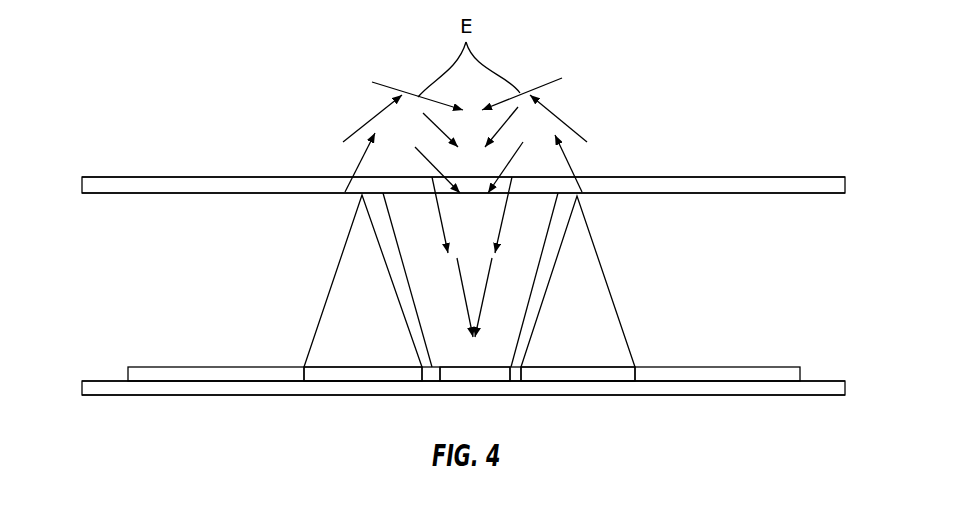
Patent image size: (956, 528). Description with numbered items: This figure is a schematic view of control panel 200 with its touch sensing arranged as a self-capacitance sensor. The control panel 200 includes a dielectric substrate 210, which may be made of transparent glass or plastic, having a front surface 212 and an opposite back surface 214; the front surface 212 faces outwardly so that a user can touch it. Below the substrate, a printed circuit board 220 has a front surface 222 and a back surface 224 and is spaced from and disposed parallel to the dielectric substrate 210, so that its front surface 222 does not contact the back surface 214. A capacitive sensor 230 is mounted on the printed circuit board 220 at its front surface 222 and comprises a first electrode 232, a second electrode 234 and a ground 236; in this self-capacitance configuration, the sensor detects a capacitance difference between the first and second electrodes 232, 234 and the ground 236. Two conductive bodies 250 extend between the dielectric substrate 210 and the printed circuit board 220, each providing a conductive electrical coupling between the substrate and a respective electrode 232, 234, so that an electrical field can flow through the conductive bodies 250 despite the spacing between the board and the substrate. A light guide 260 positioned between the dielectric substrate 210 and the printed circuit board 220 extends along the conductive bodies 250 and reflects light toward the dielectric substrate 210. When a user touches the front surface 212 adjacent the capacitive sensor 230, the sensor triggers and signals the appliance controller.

The control panel 200 is at (245, 73).
The dielectric substrate 210 is at (835, 185).
The front surface of dielectric substrate 212 is at (108, 173).
The back surface of dielectric substrate 214 is at (108, 197).
The printed circuit board 220 is at (835, 389).
The front surface of printed circuit board 222 is at (108, 377).
The back surface of printed circuit board 224 is at (108, 398).
The capacitive sensor 230 is at (668, 372).
The first electrode 232 is at (347, 370).
The second electrode 234 is at (567, 372).
The ground 236 is at (475, 370).
The conductive bodies 250 is at (325, 307).
The light guide 260 is at (395, 237).